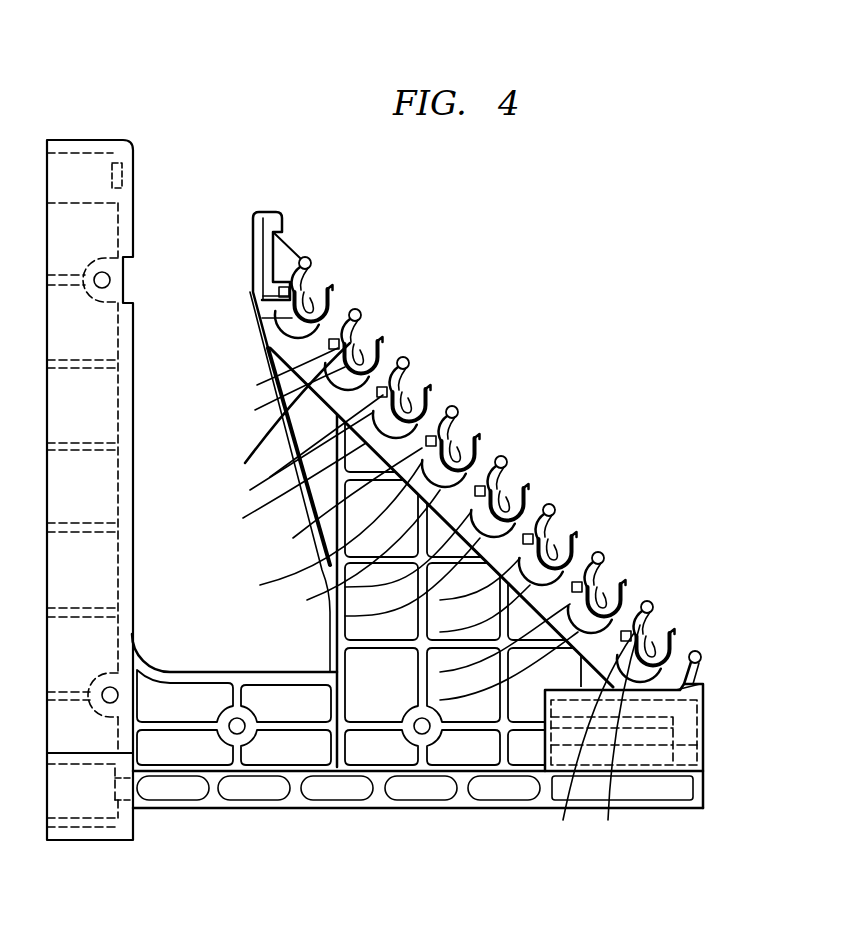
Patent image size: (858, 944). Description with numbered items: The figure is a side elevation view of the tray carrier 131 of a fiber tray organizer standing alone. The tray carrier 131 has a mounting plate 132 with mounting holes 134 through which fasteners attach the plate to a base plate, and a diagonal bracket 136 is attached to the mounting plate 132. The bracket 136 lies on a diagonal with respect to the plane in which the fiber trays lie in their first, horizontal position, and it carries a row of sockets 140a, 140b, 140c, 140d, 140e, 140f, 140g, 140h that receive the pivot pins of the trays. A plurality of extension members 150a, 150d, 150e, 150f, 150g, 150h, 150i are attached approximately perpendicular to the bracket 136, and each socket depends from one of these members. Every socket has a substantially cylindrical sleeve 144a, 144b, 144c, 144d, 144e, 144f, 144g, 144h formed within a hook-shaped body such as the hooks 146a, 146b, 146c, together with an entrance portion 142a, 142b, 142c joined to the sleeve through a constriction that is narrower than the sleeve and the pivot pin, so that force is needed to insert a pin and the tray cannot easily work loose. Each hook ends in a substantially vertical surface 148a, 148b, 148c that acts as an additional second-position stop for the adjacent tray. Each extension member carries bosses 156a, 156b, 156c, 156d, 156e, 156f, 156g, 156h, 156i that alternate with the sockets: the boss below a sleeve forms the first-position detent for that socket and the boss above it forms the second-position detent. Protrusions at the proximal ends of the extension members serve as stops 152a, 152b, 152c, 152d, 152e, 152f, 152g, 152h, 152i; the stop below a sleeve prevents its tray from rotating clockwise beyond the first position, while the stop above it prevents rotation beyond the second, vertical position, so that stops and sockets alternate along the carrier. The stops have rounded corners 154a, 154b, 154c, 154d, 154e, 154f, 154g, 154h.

The tray carrier 131 is at (652, 225).
The mounting plate 132 is at (128, 164).
The mounting holes 134 is at (105, 181).
The diagonal bracket 136 is at (262, 446).
The socket 140a is at (372, 186).
The socket 140b is at (500, 238).
The socket 140c is at (590, 292).
The socket 140d is at (668, 338).
The socket 140e is at (678, 425).
The socket 140f is at (718, 473).
The socket 140g is at (732, 523).
The socket 140h is at (762, 618).
The entrance portion 142a is at (296, 285).
The entrance portion 142b is at (342, 337).
The entrance portion 142c is at (392, 388).
The sleeve 144a is at (328, 289).
The sleeve 144b is at (378, 341).
The sleeve 144c is at (426, 389).
The sleeve 144d is at (475, 438).
The sleeve 144e is at (524, 488).
The sleeve 144f is at (572, 536).
The sleeve 144g is at (621, 584).
The sleeve 144h is at (671, 634).
The hook-shaped body 146a is at (322, 324).
The hook-shaped body 146b is at (272, 477).
The hook-shaped body 146c is at (333, 485).
The vertical surface 148a is at (332, 285).
The vertical surface 148b is at (383, 338).
The vertical surface 148c is at (430, 385).
The extension member 150a is at (300, 262).
The extension member 150d is at (466, 449).
The extension member 150e is at (513, 499).
The extension member 150f is at (561, 547).
The extension member 150g is at (610, 595).
The extension member 150h is at (659, 644).
The extension member 150i is at (703, 678).
The second stop 152a is at (285, 297).
The stop 152b is at (257, 385).
The stop 152c is at (283, 487).
The stop 152d is at (260, 585).
The stop 152e is at (402, 583).
The stop 152f is at (487, 589).
The stop 152g is at (492, 657).
The stop 152h is at (563, 820).
The first stop 152i is at (690, 690).
The rounded corner 154a is at (290, 317).
The rounded corner 154b is at (260, 413).
The rounded corner 154c is at (293, 538).
The rounded corner 154d is at (307, 600).
The rounded corner 154e is at (403, 612).
The rounded corner 154f is at (490, 620).
The rounded corner 154g is at (494, 688).
The rounded corner 154h is at (609, 820).
The boss 156a is at (301, 256).
The boss 156b is at (360, 310).
The boss 156c is at (408, 360).
The boss 156d is at (457, 407).
The boss 156e is at (506, 459).
The boss 156f is at (554, 507).
The boss 156g is at (603, 555).
The boss 156h is at (652, 604).
The boss 156i is at (702, 656).